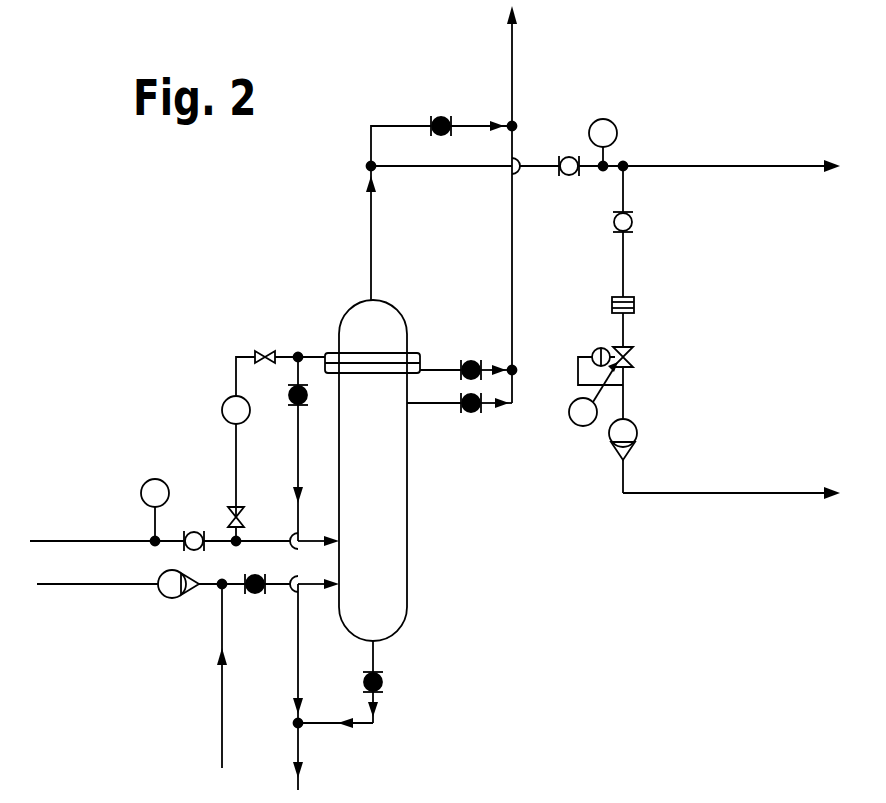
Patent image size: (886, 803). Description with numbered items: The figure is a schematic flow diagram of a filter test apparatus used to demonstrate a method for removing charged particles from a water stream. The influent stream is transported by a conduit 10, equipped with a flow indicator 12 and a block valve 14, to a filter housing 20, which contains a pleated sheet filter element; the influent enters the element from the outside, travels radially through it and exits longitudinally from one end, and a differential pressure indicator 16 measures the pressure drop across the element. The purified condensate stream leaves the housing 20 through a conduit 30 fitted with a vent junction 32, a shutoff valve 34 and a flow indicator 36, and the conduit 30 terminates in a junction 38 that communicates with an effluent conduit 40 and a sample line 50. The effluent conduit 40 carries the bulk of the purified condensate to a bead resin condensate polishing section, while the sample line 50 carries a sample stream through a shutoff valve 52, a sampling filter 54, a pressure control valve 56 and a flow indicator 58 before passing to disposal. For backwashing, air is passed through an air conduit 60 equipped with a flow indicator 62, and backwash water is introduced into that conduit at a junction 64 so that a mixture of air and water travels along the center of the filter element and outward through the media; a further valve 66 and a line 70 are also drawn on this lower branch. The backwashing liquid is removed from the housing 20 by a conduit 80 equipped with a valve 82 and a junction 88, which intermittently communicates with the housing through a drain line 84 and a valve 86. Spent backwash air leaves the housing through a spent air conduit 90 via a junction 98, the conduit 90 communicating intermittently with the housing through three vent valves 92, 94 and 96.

The conduit 10 is at (76, 534).
The flow indicator 12 is at (143, 484).
The block valve 14 is at (200, 530).
The differential pressure indicator 16 is at (222, 402).
The filter housing 20 is at (412, 574).
The conduit 30 is at (380, 233).
The vent junction 32 is at (366, 166).
The shutoff valve 34 is at (572, 178).
The flow indicator 36 is at (608, 120).
The junction 38 is at (627, 163).
The effluent conduit 40 is at (741, 158).
The sample line 50 is at (741, 503).
The shutoff valve 52 is at (634, 222).
The sampling filter 54 is at (644, 303).
The pressure control valve 56 is at (633, 362).
The flow indicator 58 is at (638, 433).
The air conduit 60 is at (60, 592).
The flow indicator 62 is at (170, 600).
The junction 64 is at (218, 590).
The valve 66 is at (258, 596).
The supply line 70 is at (212, 717).
The conduit 80 is at (310, 746).
The valve 82 is at (280, 447).
The drain line 84 is at (377, 657).
The valve 86 is at (384, 683).
The junction 88 is at (294, 722).
The spent air conduit 90 is at (524, 66).
The vent valve 92 is at (470, 414).
The vent valve 94 is at (472, 355).
The vent valve 96 is at (452, 118).
The junction 98 is at (519, 124).